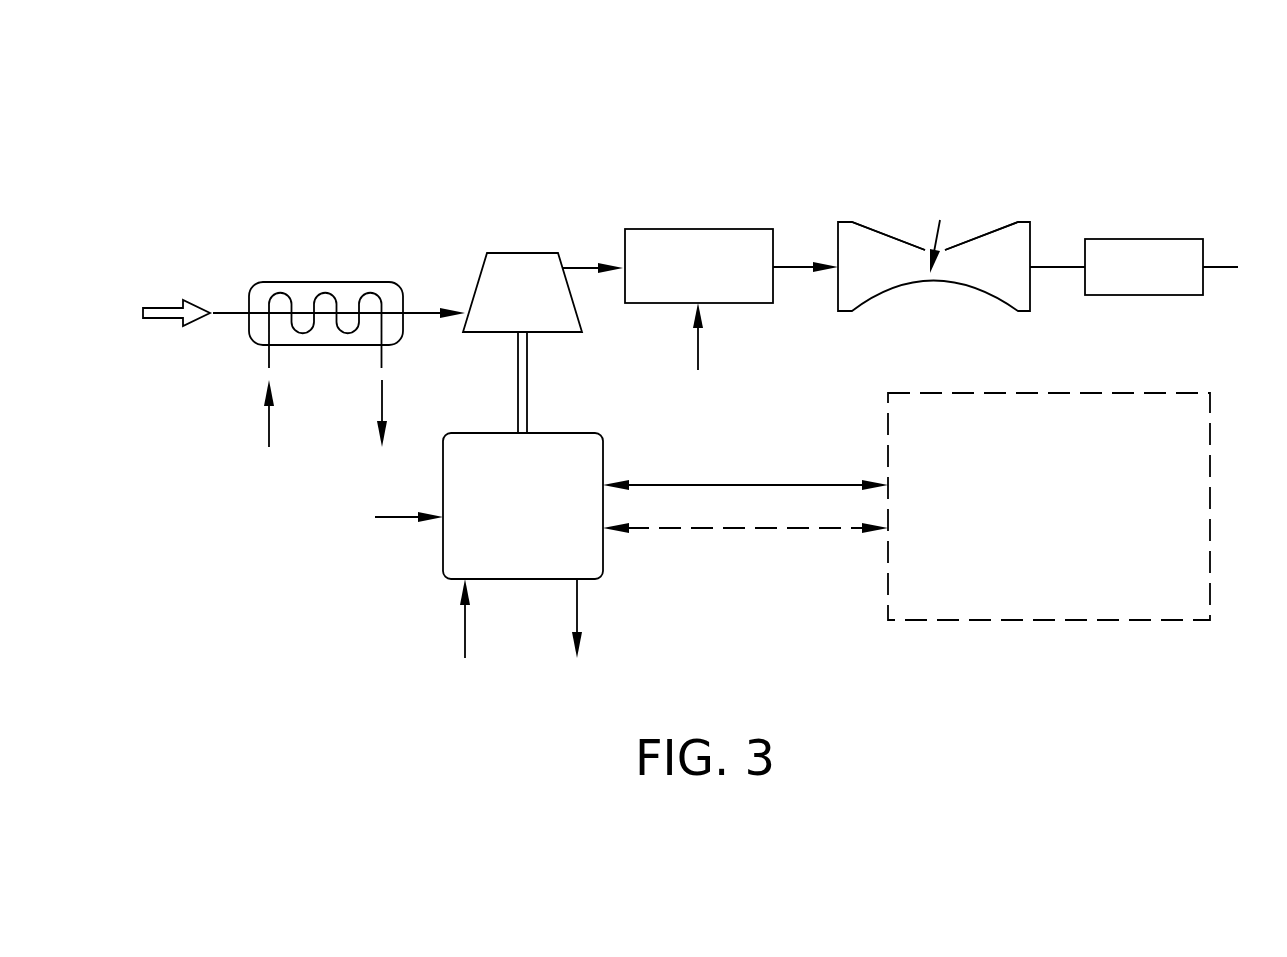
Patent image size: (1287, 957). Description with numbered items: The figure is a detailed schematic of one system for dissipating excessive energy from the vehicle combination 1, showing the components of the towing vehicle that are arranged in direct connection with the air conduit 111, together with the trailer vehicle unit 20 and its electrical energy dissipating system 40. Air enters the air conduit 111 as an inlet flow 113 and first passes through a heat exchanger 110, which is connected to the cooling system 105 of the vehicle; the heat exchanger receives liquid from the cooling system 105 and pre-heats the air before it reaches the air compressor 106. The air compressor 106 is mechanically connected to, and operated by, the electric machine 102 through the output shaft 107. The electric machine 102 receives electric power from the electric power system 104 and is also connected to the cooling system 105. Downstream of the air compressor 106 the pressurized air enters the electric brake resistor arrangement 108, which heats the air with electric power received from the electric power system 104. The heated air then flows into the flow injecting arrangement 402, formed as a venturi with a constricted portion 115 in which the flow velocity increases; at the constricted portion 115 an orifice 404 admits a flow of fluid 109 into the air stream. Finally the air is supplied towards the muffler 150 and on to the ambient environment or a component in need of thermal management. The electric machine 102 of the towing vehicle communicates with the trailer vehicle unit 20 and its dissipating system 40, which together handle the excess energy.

The vehicle combination 1 is at (378, 114).
The inlet air flow 113 is at (164, 306).
The heat exchanger 110 is at (330, 282).
The cooling system 105 is at (269, 425).
The air conduit 111 is at (435, 271).
The air compressor 106 is at (518, 253).
The output shaft 107 is at (528, 384).
The electric brake resistor arrangement 108 is at (700, 229).
The electric power system 104 is at (698, 351).
The constricted portion 115 is at (935, 285).
The orifice 404 is at (925, 247).
The flow injecting arrangement 402 is at (990, 233).
The flow of fluid 109 is at (942, 228).
The muffler 150 is at (1170, 239).
The electric machine 102 is at (522, 579).
The trailer vehicle unit 20 is at (1192, 363).
The electrical energy dissipating system 40 is at (960, 590).